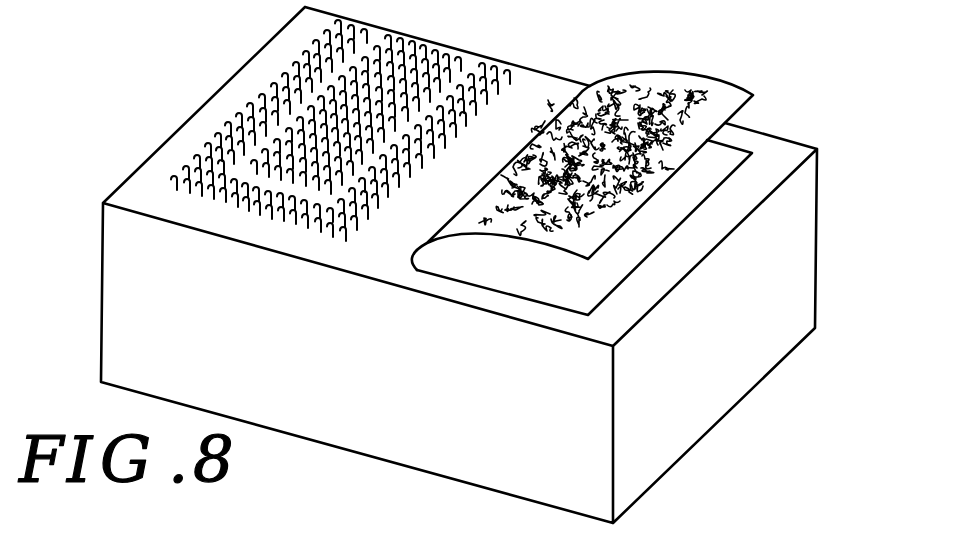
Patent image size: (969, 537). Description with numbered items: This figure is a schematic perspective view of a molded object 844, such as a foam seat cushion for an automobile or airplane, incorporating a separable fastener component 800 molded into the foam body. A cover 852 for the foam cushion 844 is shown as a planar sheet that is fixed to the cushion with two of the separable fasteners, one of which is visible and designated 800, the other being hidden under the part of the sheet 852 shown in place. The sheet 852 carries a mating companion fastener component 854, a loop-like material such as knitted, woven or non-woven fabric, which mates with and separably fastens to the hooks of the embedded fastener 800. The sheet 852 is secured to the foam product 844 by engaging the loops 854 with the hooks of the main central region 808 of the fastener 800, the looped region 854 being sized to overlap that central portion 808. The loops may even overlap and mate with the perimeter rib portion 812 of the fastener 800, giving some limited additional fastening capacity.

The separable fastener component 800 is at (497, 65).
The main central region 808 is at (378, 110).
The perimeter rib portion 812 is at (252, 103).
The molded object 844 is at (760, 130).
The cover 852 is at (697, 87).
The mating companion fastener component 854 is at (527, 177).